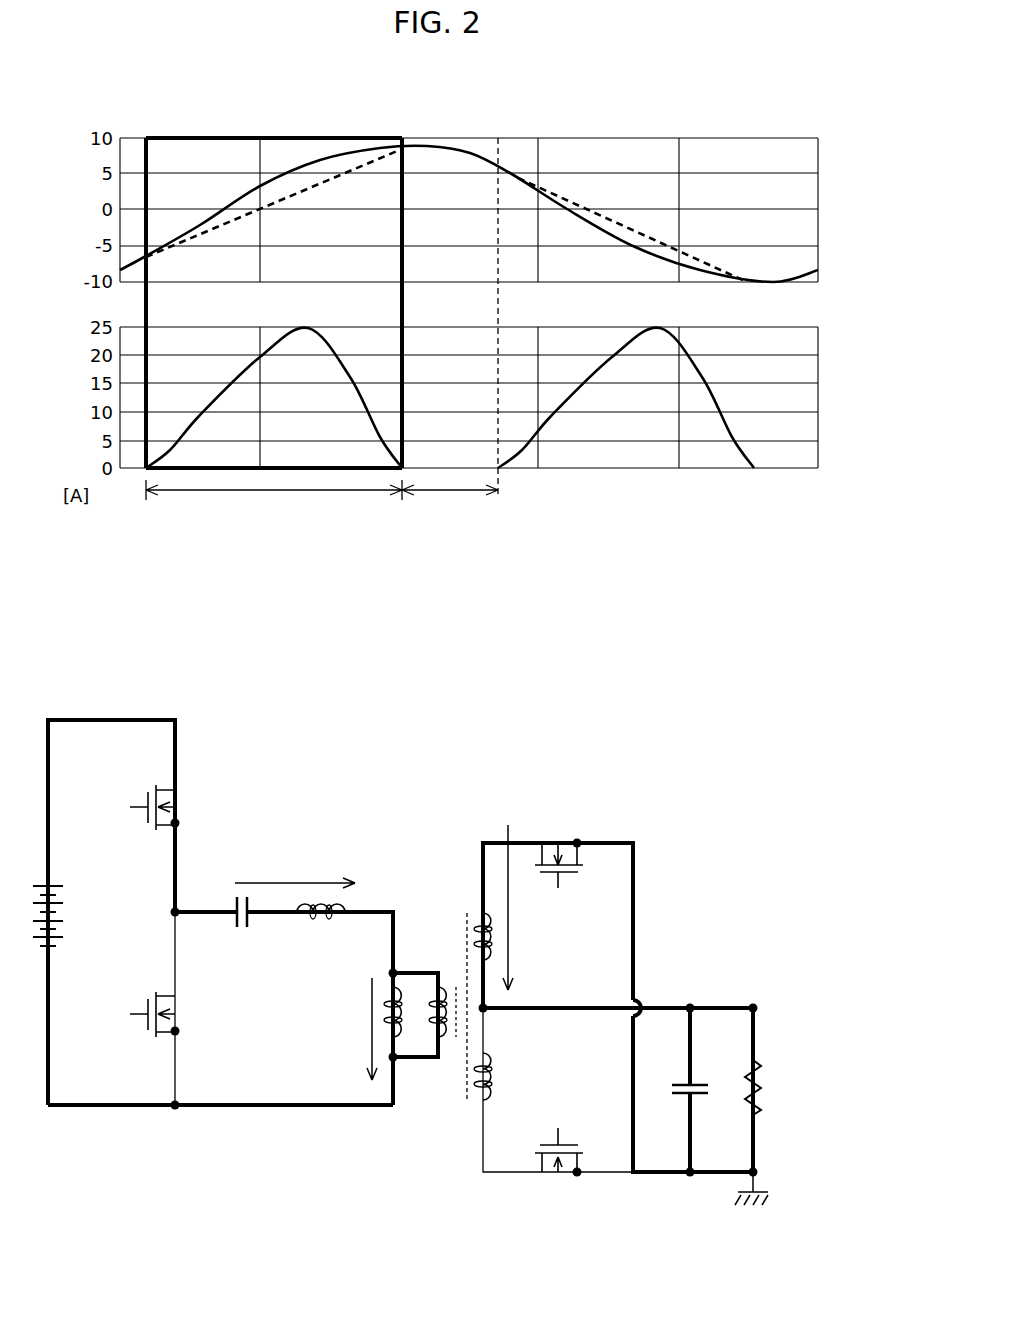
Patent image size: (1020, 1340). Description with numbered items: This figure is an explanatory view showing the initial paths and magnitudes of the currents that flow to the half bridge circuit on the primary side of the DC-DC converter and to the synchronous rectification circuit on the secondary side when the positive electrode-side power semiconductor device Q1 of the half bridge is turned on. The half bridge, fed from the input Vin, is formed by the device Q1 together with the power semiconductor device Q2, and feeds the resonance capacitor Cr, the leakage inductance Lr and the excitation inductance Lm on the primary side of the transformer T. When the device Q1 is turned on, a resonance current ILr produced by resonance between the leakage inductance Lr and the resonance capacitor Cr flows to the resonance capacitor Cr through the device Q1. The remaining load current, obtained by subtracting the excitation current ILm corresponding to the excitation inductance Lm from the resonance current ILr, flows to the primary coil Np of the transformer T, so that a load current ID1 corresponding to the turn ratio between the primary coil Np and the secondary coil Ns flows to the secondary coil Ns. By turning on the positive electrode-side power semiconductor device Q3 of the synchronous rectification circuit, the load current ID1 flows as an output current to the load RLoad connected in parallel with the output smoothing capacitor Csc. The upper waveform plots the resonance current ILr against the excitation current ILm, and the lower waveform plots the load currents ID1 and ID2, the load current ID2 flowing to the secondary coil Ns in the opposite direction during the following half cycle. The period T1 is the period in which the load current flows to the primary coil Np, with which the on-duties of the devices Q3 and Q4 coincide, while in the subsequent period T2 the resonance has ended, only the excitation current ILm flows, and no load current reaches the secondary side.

The positive electrode-side power semiconductor device Q1 is at (171, 807).
The second switching element Q2 is at (171, 1014).
The positive electrode-side power semiconductor device Q3 is at (571, 872).
The power semiconductor device Q4 is at (572, 1150).
The input voltage source Vin is at (69, 916).
The resonance capacitor Cr is at (244, 927).
The leakage inductance Lr is at (321, 931).
The excitation inductance Lm is at (407, 1002).
The primary coil Np is at (448, 1042).
The secondary coil Ns is at (478, 912).
The transformer T is at (457, 926).
The output smoothing capacitor Csc is at (673, 1090).
The load RLoad is at (789, 1090).
The resonance current ILr is at (340, 160).
The excitation current ILm is at (365, 167).
The load current ID1 is at (345, 354).
The load current ID2 is at (599, 369).
The period T1 is at (274, 497).
The second period T2 is at (450, 499).